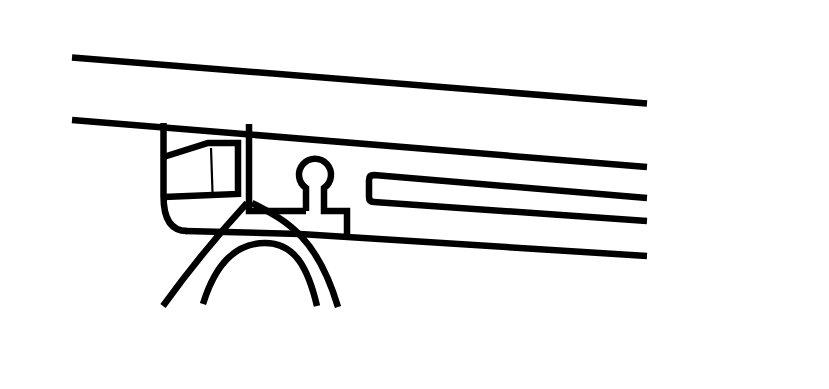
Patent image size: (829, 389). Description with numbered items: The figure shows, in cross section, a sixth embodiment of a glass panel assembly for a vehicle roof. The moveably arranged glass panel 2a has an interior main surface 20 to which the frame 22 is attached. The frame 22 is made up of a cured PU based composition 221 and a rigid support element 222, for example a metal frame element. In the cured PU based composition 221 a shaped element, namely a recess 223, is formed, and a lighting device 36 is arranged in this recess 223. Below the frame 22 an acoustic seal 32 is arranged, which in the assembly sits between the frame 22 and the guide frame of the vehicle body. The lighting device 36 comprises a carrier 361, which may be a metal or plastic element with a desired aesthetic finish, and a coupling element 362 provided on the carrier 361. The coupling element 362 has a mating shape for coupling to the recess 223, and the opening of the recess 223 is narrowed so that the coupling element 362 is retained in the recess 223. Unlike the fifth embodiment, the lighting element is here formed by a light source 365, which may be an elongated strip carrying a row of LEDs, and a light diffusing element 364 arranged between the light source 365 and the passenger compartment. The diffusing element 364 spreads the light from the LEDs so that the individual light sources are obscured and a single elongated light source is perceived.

The interior main surface 20 is at (115, 131).
The glass panel 2a is at (577, 137).
The frame 22 is at (449, 250).
The cured PU based composition 221 is at (363, 158).
The rigid support element 222 is at (447, 195).
The recess 223 is at (298, 156).
The acoustic seal 32 is at (210, 272).
The lighting device 36 is at (185, 124).
The carrier 361 is at (193, 141).
The coupling element 362 is at (309, 181).
The light diffusing element 364 is at (176, 178).
The light source 365 is at (224, 175).